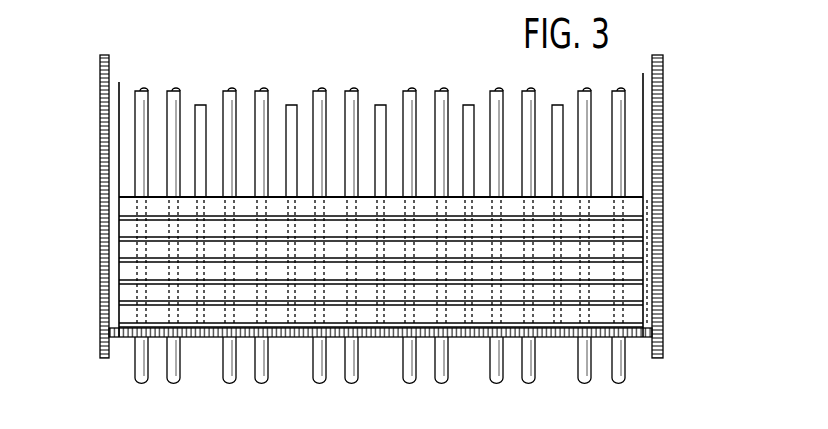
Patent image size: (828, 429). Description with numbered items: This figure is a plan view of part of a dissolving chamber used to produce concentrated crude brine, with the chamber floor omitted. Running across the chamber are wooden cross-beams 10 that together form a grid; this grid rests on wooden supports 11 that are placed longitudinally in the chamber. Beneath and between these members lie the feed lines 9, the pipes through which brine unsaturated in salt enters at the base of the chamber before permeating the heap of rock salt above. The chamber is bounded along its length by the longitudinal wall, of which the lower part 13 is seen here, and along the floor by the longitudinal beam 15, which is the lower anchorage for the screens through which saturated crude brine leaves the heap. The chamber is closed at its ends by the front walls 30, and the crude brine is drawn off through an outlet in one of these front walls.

The feed lines 9 is at (313, 100).
The cross-beams 10 is at (635, 270).
The wooden supports 11 is at (200, 104).
The lower part of the longitudinal wall 13 is at (100, 178).
The longitudinal beam 15 is at (118, 84).
The front walls 30 is at (292, 331).